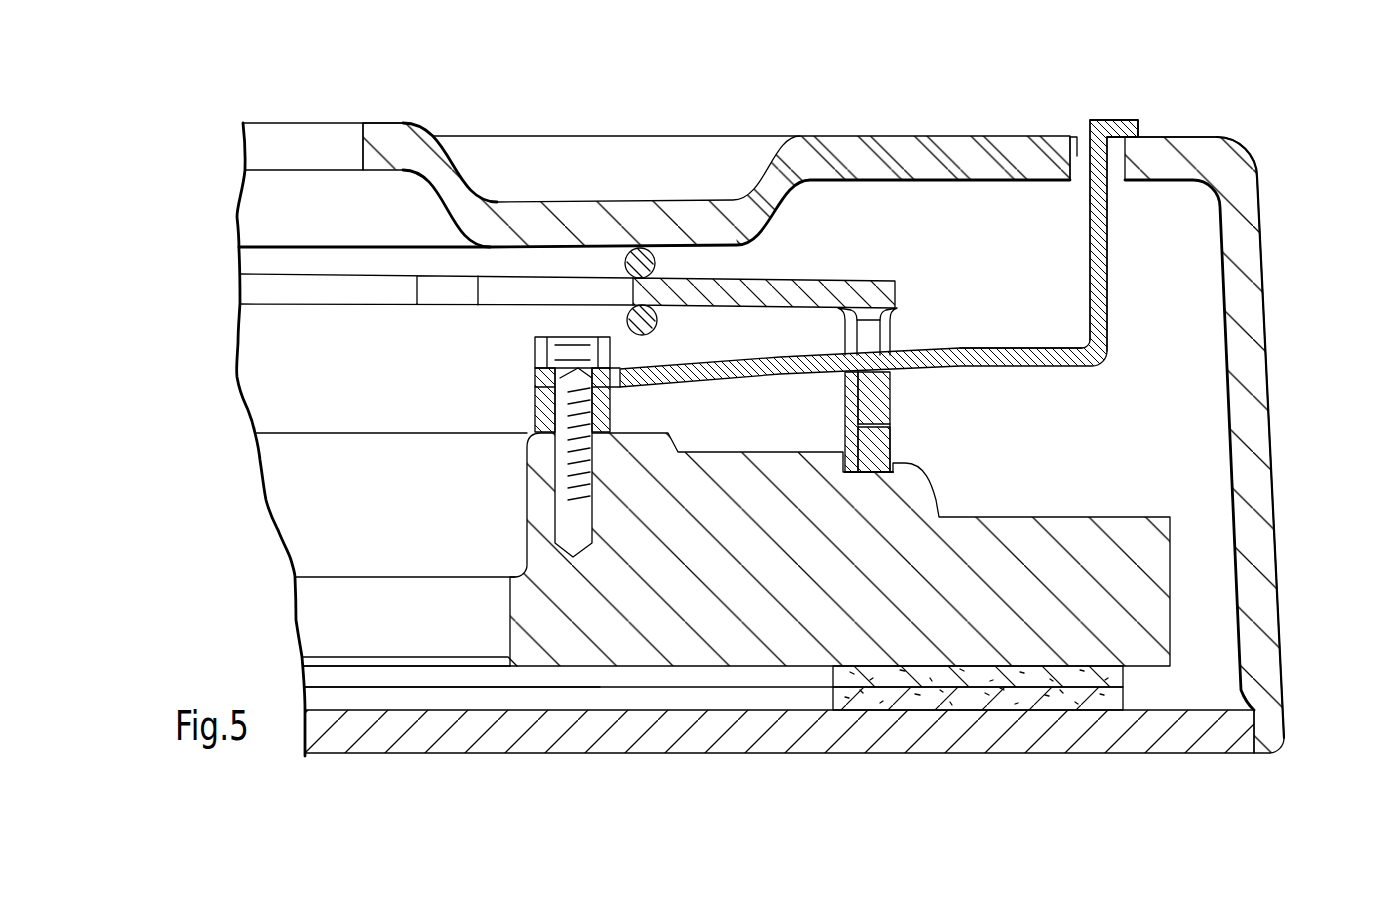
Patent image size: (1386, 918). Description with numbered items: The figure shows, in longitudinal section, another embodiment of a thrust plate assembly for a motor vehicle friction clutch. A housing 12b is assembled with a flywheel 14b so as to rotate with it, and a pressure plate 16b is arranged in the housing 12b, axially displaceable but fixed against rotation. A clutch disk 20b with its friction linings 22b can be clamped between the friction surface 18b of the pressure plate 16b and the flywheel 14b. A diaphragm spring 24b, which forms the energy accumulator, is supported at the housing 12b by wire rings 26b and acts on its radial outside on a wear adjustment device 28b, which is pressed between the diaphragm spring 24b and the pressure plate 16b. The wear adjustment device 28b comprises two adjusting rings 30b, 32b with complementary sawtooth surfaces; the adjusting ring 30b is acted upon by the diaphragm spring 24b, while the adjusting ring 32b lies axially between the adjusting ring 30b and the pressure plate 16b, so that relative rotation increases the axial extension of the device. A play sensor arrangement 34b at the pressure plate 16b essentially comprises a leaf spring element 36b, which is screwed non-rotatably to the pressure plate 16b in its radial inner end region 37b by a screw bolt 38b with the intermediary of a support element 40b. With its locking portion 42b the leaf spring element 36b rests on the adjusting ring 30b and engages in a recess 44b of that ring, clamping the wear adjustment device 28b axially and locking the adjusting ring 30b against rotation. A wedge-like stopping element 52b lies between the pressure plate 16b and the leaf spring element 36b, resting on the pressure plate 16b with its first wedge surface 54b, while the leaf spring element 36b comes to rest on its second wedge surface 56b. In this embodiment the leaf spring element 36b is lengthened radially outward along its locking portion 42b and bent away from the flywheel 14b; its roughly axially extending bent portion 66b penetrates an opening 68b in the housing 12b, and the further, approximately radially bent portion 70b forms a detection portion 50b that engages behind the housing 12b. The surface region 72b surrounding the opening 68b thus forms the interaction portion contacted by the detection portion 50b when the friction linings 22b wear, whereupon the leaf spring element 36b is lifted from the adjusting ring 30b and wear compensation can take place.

The housing 12b is at (1247, 153).
The flywheel 14b is at (1195, 748).
The pressure plate 16b is at (1163, 570).
The friction surface 18b is at (1160, 672).
The clutch disk 20b is at (400, 688).
The friction linings 22b is at (1030, 693).
The diaphragm spring 24b is at (274, 297).
The wire rings 26b is at (637, 307).
The wear adjustment device 28b is at (945, 423).
The adjusting ring 30b is at (895, 388).
The adjusting ring 32b is at (890, 445).
The play sensor arrangement 34b is at (723, 322).
The leaf spring element 36b is at (985, 347).
The radial inner end region 37b is at (534, 383).
The screw bolt 38b is at (562, 485).
The support element 40b is at (534, 410).
The locking portion 42b is at (888, 328).
The recess 44b is at (910, 348).
The detection portion 50b is at (1103, 118).
The stopping element 52b is at (852, 413).
The first wedge surface 54b is at (880, 450).
The second wedge surface 56b is at (862, 333).
The bent portion 66b is at (1103, 255).
The opening 68b is at (1078, 137).
The bent portion 70b is at (1131, 120).
The surface region 72b is at (1147, 137).